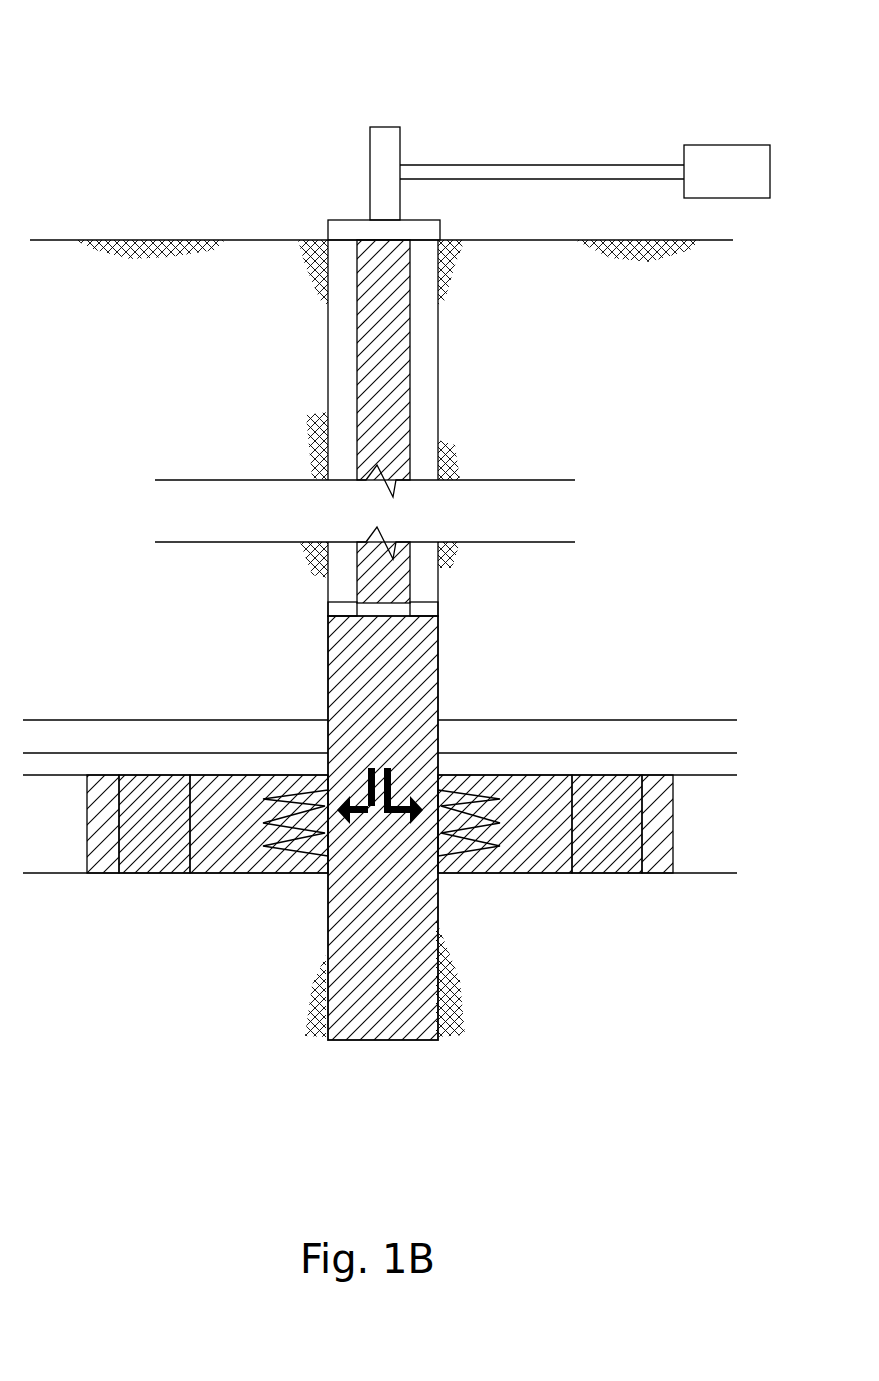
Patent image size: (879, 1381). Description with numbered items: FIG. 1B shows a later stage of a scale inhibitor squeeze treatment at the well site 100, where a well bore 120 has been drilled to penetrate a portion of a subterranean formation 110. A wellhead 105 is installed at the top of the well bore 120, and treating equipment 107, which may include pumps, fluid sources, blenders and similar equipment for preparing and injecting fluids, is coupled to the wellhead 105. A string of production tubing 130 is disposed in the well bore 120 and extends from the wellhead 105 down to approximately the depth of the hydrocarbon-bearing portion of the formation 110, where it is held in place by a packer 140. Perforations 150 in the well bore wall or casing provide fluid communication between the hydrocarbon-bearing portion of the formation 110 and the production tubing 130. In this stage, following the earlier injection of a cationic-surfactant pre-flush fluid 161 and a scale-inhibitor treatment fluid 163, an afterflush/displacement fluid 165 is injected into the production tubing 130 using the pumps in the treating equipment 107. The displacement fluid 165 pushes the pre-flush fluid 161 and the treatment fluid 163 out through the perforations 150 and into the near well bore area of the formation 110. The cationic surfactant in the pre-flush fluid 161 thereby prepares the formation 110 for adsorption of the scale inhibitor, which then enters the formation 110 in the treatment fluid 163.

The well site 100 is at (158, 52).
The wellhead 105 is at (400, 137).
The treating equipment 107 is at (747, 186).
The subterranean formation 110 is at (207, 348).
The well bore 120 is at (440, 415).
The production tubing 130 is at (356, 432).
The packer 140 is at (343, 602).
The perforations 150 is at (302, 850).
The pre-flush fluid 161 is at (662, 852).
The treatment fluid 163 is at (610, 852).
The afterflush/displacement fluid 165 is at (395, 690).